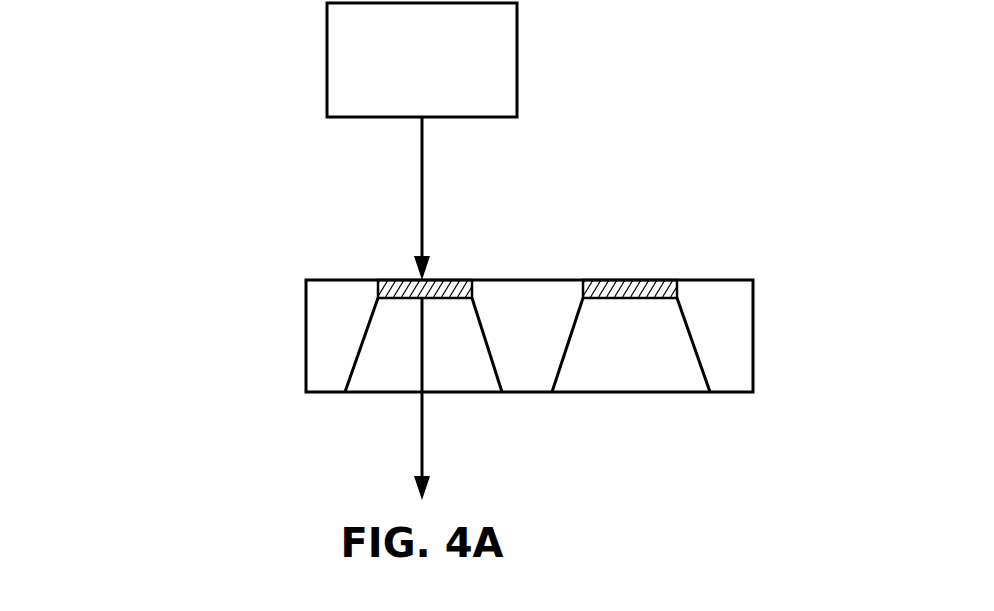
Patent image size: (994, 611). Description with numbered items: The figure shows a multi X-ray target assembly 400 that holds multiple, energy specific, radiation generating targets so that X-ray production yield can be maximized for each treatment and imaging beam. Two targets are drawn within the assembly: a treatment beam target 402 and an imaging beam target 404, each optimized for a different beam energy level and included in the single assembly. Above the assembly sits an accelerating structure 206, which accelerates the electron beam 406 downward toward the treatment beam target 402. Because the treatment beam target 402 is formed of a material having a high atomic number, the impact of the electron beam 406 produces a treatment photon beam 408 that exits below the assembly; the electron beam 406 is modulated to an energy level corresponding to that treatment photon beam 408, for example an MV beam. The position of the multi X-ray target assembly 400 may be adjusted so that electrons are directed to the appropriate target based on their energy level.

The multi X-ray target assembly 400 is at (112, 42).
The accelerating structure 206 is at (422, 60).
The treatment beam target 402 is at (362, 269).
The imaging beam target 404 is at (694, 267).
The electron beam 406 is at (490, 198).
The treatment photon beam 408 is at (475, 399).